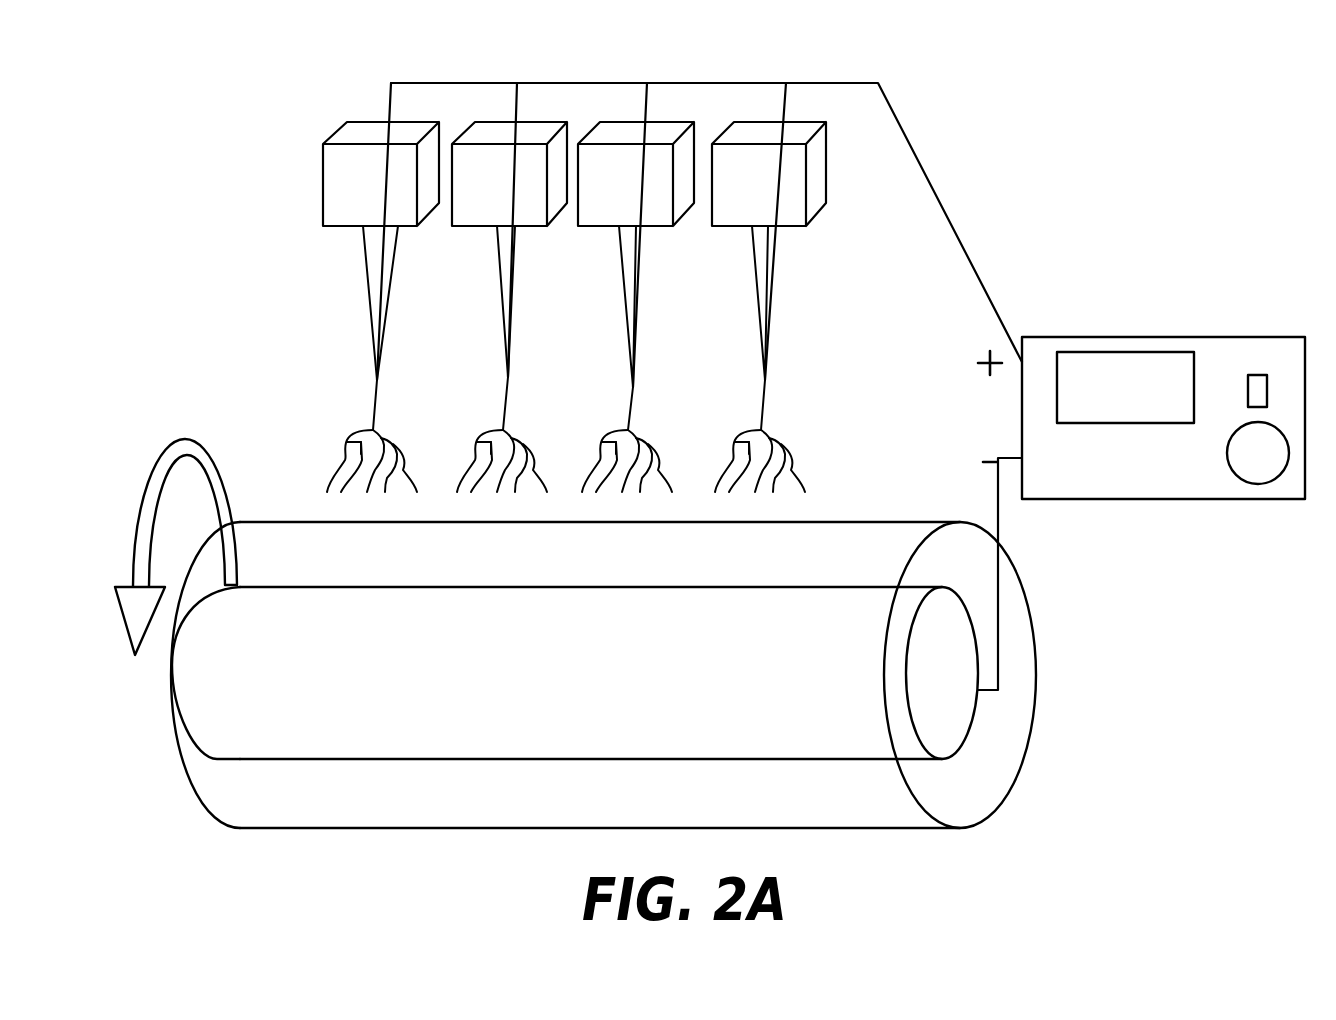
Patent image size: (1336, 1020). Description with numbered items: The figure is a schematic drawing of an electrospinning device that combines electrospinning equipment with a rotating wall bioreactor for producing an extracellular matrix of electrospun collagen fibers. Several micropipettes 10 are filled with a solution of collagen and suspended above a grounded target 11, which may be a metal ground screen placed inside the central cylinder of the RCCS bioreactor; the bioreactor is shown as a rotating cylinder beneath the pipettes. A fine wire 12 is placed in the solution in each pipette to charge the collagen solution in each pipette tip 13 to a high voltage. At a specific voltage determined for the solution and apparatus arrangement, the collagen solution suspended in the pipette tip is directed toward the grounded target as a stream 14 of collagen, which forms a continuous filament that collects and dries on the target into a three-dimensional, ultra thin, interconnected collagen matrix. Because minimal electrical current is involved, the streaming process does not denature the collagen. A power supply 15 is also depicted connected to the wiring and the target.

The micropipettes 10 is at (410, 226).
The grounded target 11 is at (975, 711).
The fine wire 12 is at (391, 105).
The pipette tip 13 is at (377, 389).
The stream of collagen 14 is at (345, 460).
The power supply 15 is at (1095, 337).